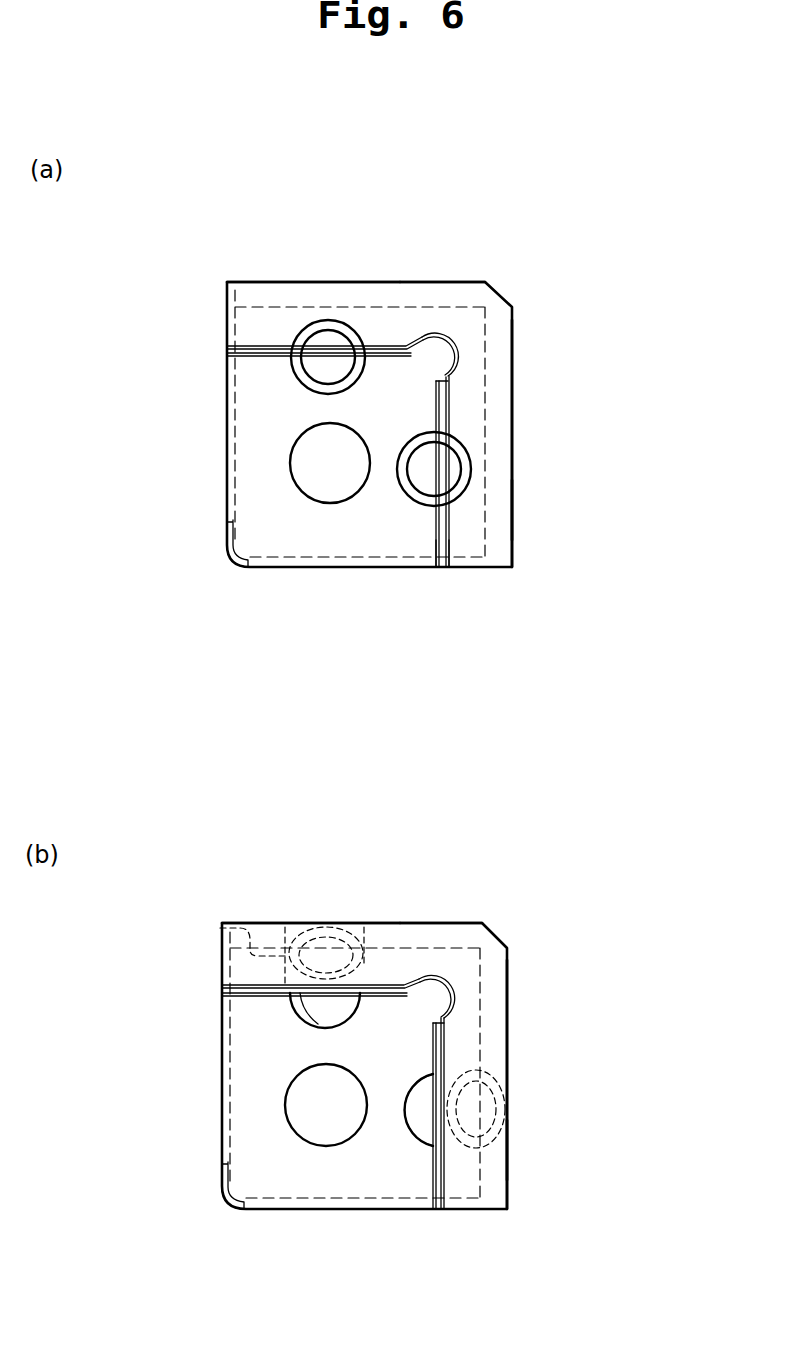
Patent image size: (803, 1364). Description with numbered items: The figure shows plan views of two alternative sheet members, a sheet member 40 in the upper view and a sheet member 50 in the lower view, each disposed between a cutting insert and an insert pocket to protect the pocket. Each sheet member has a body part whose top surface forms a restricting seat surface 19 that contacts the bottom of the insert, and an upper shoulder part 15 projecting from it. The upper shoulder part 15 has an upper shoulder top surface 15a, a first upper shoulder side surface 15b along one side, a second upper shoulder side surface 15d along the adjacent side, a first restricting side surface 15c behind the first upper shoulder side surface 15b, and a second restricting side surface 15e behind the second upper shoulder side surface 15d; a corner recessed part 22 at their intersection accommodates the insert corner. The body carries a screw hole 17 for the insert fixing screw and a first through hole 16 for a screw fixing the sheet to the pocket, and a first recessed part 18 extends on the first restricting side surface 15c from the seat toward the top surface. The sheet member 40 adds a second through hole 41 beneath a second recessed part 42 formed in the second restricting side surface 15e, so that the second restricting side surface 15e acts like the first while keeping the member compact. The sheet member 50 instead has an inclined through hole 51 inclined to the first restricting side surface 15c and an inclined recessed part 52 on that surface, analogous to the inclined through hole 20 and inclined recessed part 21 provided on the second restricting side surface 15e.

The sheet member 40 is at (598, 286).
The sheet member 50 is at (588, 928).
The upper shoulder part 15 is at (504, 358).
The upper shoulder top surface 15a is at (450, 290).
The first upper shoulder side surface 15b is at (512, 487).
The first restricting side surface 15c is at (450, 398).
The second upper shoulder side surface 15d is at (262, 281).
The second restricting side surface 15e is at (383, 345).
The first through hole 16 is at (433, 540).
The screw hole 17 is at (303, 473).
The first recessed part 18 is at (470, 460).
The restricting seat surface 19 is at (257, 530).
The inclined through hole 20 is at (220, 928).
The inclined recessed part 21 is at (300, 1014).
The corner recessed part 22 is at (470, 336).
The second through hole 41 is at (327, 371).
The second recessed part 42 is at (325, 338).
The inclined through hole 51 is at (403, 1112).
The inclined recessed part 52 is at (437, 1105).